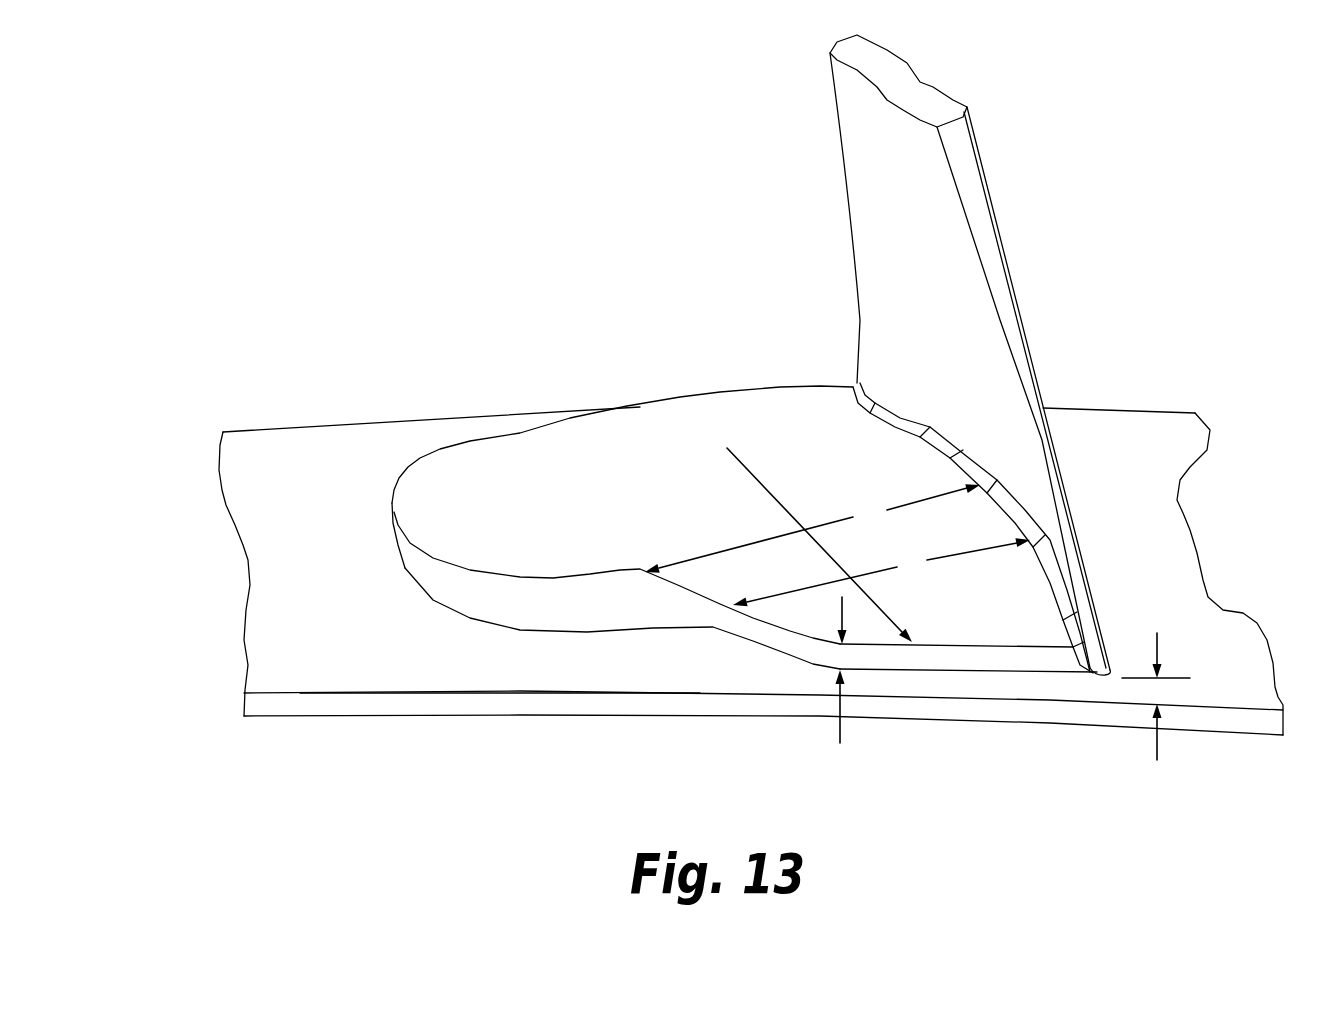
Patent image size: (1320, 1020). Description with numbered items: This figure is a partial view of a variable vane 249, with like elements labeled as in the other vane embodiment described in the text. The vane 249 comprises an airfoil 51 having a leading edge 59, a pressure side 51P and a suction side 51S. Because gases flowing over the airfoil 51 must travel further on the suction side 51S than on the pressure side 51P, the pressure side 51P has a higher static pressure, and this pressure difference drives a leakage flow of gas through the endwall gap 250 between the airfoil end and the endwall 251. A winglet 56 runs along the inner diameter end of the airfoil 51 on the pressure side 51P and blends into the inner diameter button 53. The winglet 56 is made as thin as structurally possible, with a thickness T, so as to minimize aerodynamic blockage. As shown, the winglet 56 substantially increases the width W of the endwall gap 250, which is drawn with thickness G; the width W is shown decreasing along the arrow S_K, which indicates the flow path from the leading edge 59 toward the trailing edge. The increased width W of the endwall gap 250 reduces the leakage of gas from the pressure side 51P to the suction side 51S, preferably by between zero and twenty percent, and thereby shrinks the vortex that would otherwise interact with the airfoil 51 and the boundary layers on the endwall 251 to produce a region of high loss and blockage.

The vane 249 is at (632, 186).
The airfoil 51 is at (910, 228).
The pressure side 51P is at (856, 108).
The suction side 51S is at (1002, 220).
The leading edge 59 is at (855, 330).
The inner diameter button 53 is at (567, 500).
The winglet 56 is at (953, 597).
The endwall gap 250 is at (1013, 687).
The endwall 251 is at (605, 700).